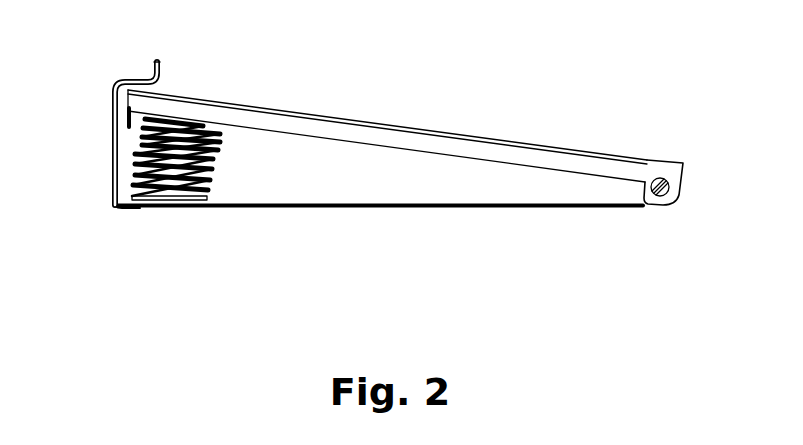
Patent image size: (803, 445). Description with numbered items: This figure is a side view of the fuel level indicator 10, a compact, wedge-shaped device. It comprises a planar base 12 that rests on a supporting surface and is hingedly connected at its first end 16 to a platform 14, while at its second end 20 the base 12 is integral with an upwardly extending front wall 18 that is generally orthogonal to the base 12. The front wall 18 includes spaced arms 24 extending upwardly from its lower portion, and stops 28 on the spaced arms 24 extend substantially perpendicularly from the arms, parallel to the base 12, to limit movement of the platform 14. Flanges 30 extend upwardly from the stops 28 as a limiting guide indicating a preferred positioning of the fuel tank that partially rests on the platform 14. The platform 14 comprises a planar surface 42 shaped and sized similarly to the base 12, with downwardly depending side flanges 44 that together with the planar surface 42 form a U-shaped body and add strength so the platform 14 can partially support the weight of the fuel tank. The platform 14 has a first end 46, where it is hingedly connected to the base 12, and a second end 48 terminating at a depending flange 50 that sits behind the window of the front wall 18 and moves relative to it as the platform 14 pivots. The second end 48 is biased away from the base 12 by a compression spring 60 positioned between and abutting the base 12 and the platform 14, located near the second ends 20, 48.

The fuel level indicator 10 is at (299, 226).
The base 12 is at (433, 212).
The platform 14 is at (337, 107).
The first end 16 is at (653, 181).
The front wall 18 is at (107, 194).
The second end 20 is at (121, 208).
The spaced arms 24 is at (113, 107).
The stops 28 is at (136, 82).
The flanges 30 is at (156, 61).
The planar surface 42 is at (348, 118).
The side flanges 44 is at (553, 162).
The first end 46 is at (655, 158).
The second end 48 is at (164, 91).
The depending flange 50 is at (126, 131).
The compression spring 60 is at (213, 170).